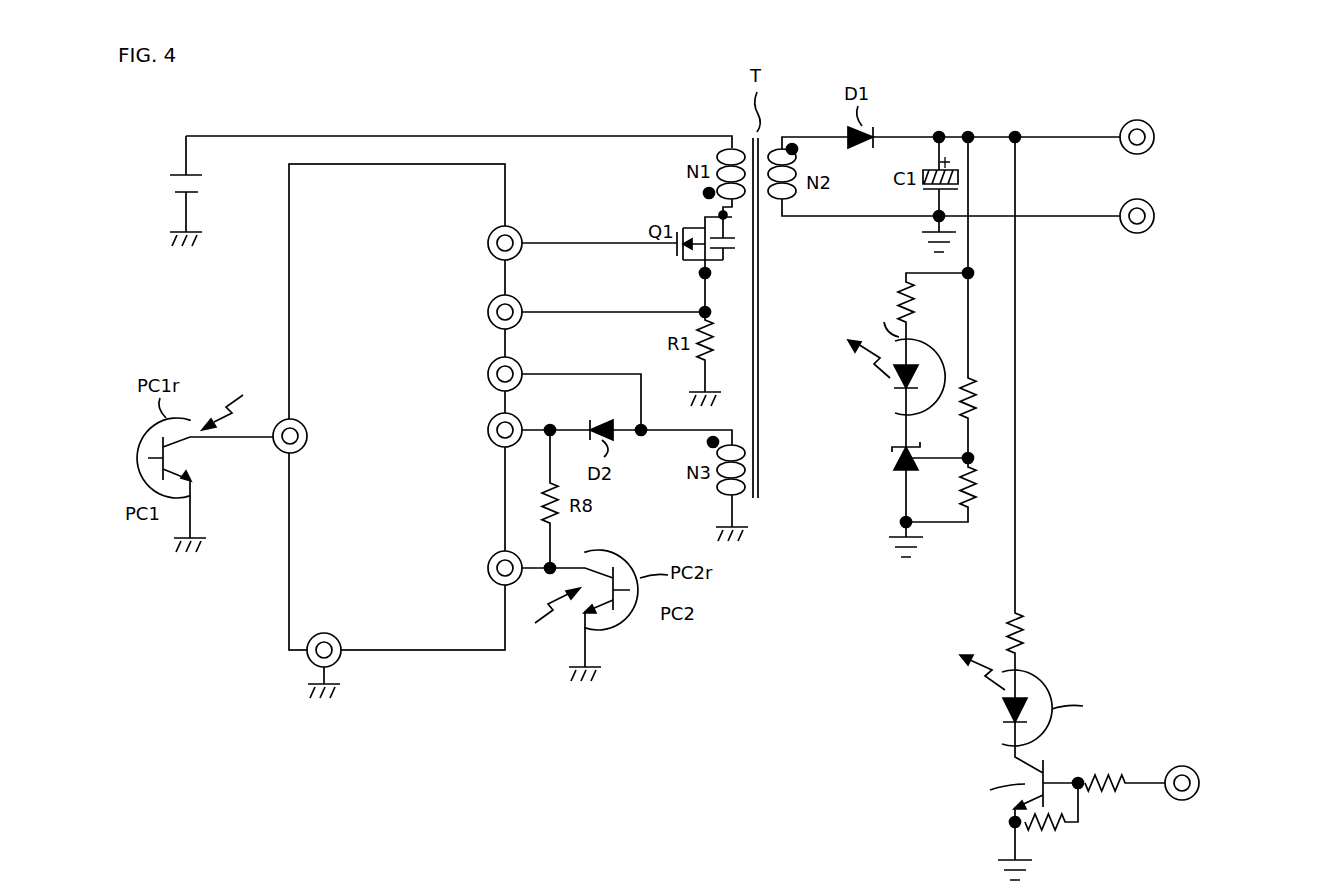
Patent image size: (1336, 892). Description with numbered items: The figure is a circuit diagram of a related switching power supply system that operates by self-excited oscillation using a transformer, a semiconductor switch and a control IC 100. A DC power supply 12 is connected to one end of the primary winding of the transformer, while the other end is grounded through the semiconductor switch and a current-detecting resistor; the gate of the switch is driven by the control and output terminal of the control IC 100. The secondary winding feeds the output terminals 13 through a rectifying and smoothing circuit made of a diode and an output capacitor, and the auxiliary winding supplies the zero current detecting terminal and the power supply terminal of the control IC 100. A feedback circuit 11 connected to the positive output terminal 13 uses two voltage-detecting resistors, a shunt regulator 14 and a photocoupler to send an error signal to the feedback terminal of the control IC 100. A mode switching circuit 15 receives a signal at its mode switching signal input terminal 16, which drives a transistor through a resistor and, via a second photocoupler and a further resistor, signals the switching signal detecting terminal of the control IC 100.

The feedback circuit 11 is at (937, 347).
The DC power supply 12 is at (207, 188).
The output terminals 13 is at (1143, 152).
The shunt regulator 14 is at (893, 463).
The mode switching circuit 15 is at (1100, 670).
The mode switching signal input terminal 16 is at (1183, 800).
The control IC 100 is at (505, 196).